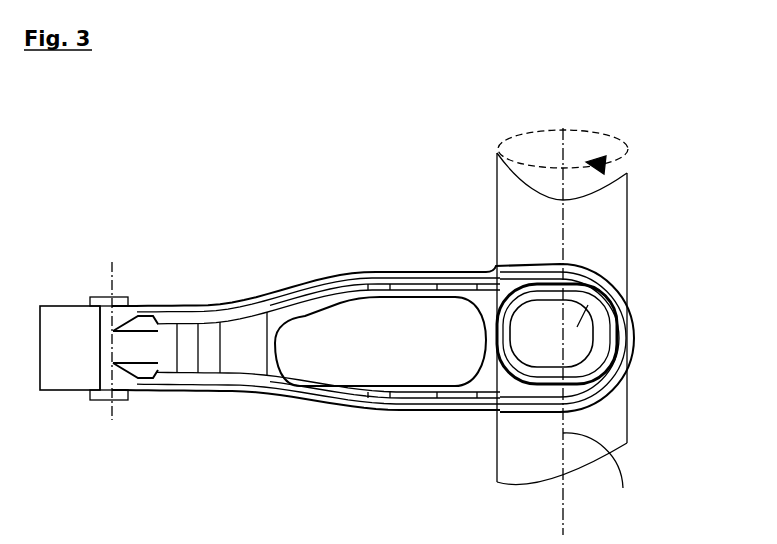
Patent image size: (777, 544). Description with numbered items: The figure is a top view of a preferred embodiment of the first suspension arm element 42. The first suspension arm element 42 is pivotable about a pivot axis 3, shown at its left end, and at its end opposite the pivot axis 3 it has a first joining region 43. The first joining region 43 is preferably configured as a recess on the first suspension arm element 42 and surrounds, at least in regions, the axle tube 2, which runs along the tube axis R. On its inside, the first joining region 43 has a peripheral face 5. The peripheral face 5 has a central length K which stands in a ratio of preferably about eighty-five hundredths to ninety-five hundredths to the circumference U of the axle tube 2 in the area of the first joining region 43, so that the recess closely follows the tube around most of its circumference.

The axle tube 2 is at (522, 217).
The pivot axis 3 is at (121, 306).
The first suspension arm element 42 is at (377, 272).
The first joining region 43 is at (608, 292).
The peripheral face 5 is at (597, 320).
The central length K is at (517, 365).
The circumference U is at (570, 162).
The tube axis R is at (607, 473).